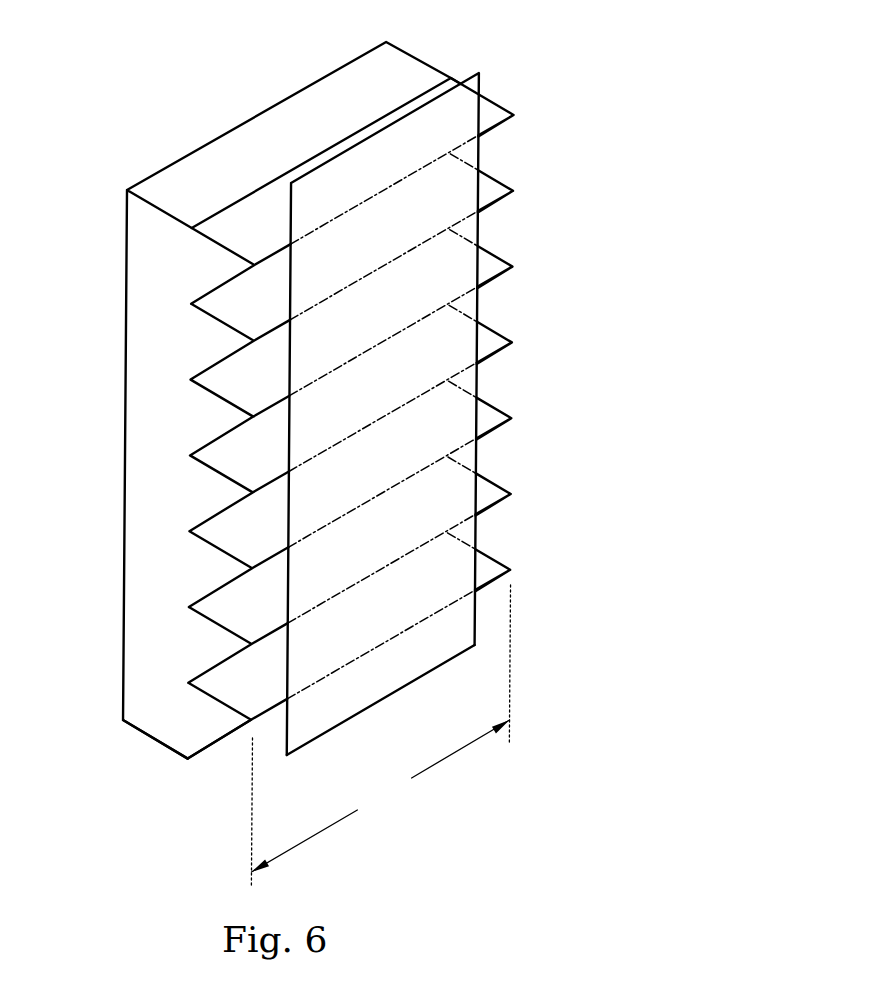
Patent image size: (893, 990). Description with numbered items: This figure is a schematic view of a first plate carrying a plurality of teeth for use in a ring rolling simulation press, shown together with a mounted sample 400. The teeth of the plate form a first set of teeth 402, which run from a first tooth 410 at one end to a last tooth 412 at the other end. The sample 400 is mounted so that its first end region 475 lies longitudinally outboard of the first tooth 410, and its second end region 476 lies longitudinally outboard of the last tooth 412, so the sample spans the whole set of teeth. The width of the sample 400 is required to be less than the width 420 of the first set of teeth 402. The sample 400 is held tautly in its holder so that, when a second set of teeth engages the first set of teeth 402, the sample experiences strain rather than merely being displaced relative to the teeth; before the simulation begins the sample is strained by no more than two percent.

The sample 400 is at (462, 122).
The first set of teeth 402 is at (144, 265).
The first tooth 410 is at (229, 268).
The last tooth 412 is at (224, 720).
The first end region 475 is at (393, 150).
The second end region 476 is at (450, 642).
The width 420 is at (380, 735).